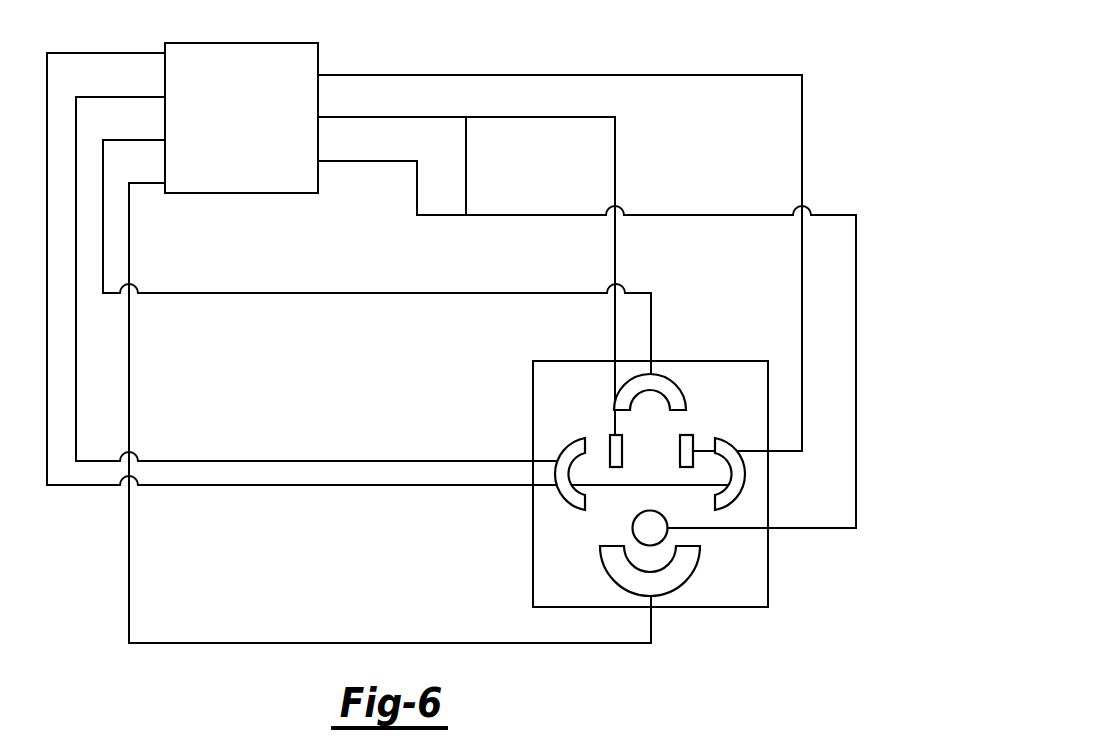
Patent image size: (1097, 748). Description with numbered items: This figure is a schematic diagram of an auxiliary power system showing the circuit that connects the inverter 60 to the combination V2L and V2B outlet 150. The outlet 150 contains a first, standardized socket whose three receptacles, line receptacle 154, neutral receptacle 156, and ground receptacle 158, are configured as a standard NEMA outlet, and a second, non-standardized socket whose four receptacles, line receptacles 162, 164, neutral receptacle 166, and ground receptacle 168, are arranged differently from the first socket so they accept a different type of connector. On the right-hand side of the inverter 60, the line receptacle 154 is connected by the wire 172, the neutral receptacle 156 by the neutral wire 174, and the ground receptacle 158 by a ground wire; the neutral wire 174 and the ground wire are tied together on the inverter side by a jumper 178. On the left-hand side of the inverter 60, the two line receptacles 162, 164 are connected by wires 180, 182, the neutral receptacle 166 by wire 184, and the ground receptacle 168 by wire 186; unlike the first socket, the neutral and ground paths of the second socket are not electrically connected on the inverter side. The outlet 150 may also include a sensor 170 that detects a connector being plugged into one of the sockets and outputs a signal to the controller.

The inverter 60 is at (240, 43).
The outlet 150 is at (769, 381).
The line receptacle 154 is at (612, 437).
The neutral receptacle 156 is at (693, 437).
The ground receptacle 158 is at (632, 528).
The line receptacle 162 is at (560, 443).
The line receptacle 164 is at (748, 476).
The neutral receptacle 166 is at (665, 379).
The ground receptacle 168 is at (688, 578).
The sensor 170 is at (583, 214).
The wire 172 is at (590, 74).
The neutral wire 174 is at (533, 116).
The jumper 178 is at (467, 178).
The wire 180 is at (214, 487).
The wire 182 is at (217, 459).
The wire 184 is at (340, 291).
The wire 186 is at (130, 241).